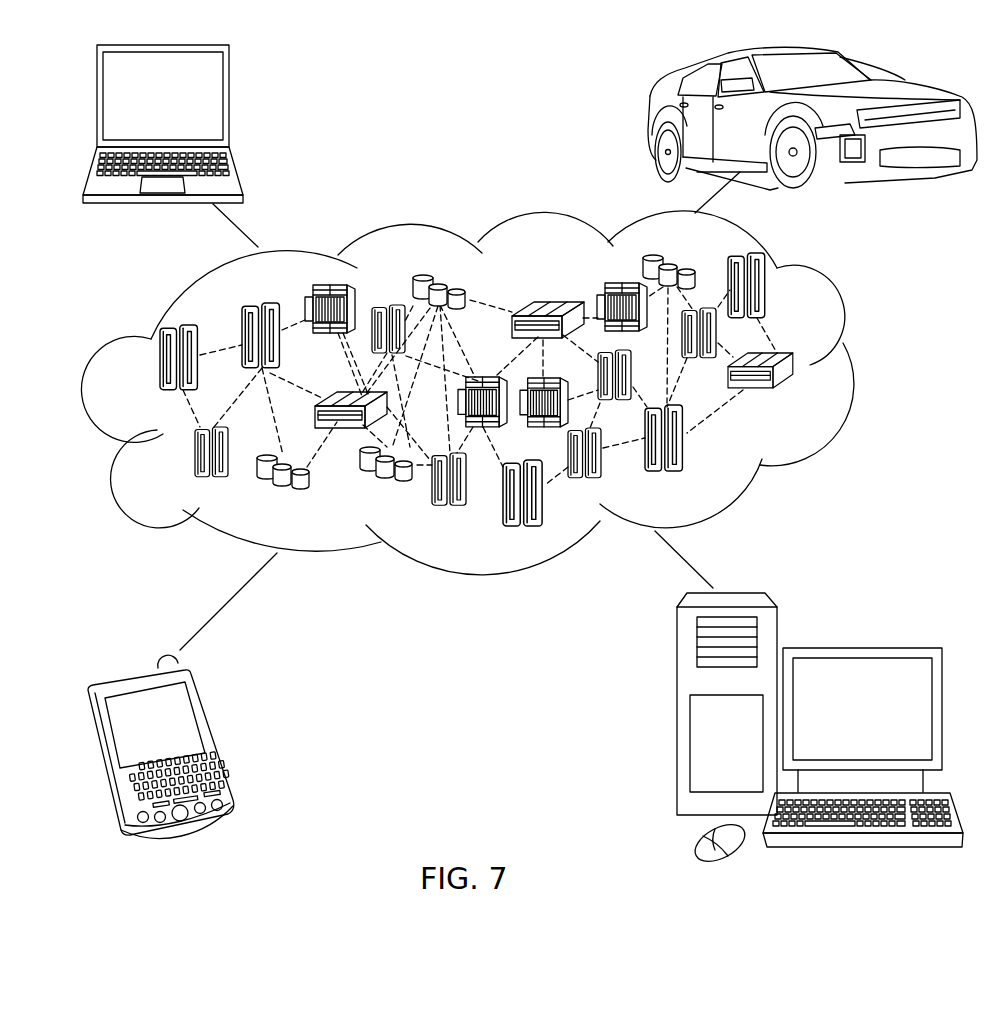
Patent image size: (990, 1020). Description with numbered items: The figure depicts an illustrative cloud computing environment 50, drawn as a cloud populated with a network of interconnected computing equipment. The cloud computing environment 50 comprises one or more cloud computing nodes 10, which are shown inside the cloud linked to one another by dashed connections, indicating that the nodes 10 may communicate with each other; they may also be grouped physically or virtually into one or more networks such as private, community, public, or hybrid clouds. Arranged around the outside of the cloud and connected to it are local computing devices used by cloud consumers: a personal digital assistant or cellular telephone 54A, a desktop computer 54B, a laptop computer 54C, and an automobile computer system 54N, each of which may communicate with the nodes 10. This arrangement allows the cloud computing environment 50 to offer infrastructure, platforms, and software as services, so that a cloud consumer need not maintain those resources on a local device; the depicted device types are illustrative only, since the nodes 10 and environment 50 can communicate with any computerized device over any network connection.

The cloud computing node 10 is at (806, 398).
The cloud computing environment 50 is at (862, 368).
The personal digital assistant or cellular telephone 54A is at (218, 737).
The desktop computer 54B is at (860, 648).
The laptop computer 54C is at (230, 105).
The automobile computer system 54N is at (650, 120).